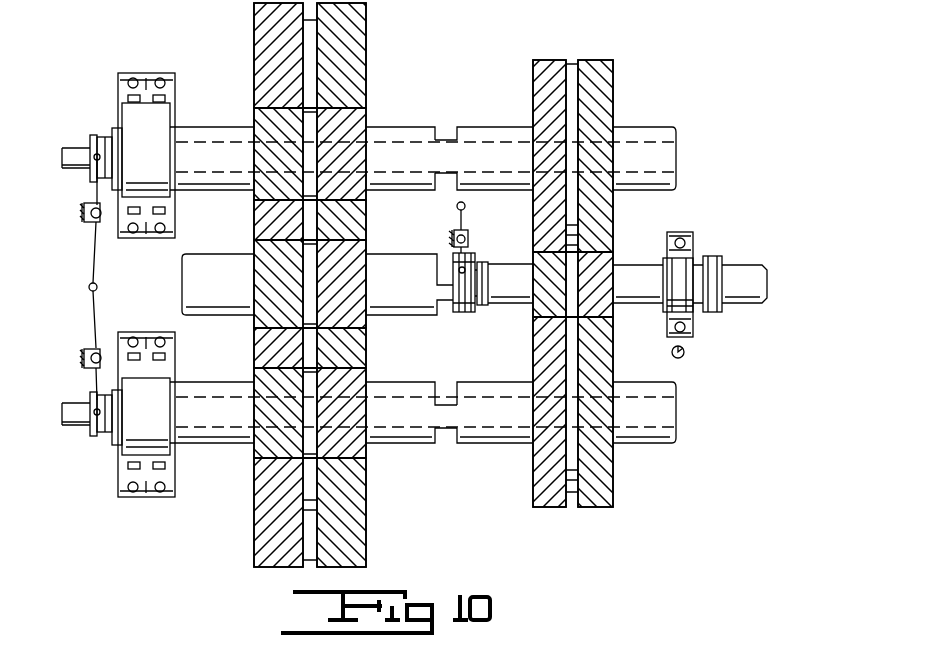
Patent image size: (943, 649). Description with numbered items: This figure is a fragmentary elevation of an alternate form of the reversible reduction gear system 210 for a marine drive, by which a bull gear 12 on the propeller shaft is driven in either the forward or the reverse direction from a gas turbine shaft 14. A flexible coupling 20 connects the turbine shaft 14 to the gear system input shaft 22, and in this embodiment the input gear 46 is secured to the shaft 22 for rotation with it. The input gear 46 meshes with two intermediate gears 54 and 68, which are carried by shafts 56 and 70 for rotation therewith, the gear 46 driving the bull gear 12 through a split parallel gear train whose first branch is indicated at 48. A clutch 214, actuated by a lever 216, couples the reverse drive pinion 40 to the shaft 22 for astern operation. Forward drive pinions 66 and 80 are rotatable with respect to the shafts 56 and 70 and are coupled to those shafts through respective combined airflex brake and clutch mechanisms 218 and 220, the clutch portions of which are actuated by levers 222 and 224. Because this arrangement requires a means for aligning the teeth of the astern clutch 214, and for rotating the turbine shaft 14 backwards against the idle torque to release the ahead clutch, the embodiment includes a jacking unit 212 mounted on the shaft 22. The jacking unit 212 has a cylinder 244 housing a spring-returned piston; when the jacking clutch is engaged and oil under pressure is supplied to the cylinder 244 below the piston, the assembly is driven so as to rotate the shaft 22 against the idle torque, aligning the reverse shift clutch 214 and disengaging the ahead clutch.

The bull gear 12 is at (362, 36).
The gas turbine shaft 14 is at (742, 268).
The flexible coupling 20 is at (716, 312).
The input shaft 22 is at (442, 272).
The reverse drive pinion 40 is at (358, 328).
The input gear 46 is at (610, 258).
The first branch of split parallel gear train 48 is at (631, 263).
The intermediate gear 54 is at (603, 63).
The shaft 56 is at (446, 145).
The forward drive pinion 66 is at (358, 118).
The intermediate gear 68 is at (606, 487).
The shaft 70 is at (445, 392).
The forward drive pinion 80 is at (358, 458).
The reversible reduction gear system 210 is at (652, 231).
The jacking unit 212 is at (709, 227).
The clutch 214 is at (467, 328).
The lever 216 is at (466, 212).
The combined airflex brake and clutch mechanism 218 is at (190, 77).
The combined airflex brake and clutch mechanism 220 is at (174, 509).
The lever 222 is at (92, 242).
The lever 224 is at (92, 320).
The cylinder 244 is at (685, 358).